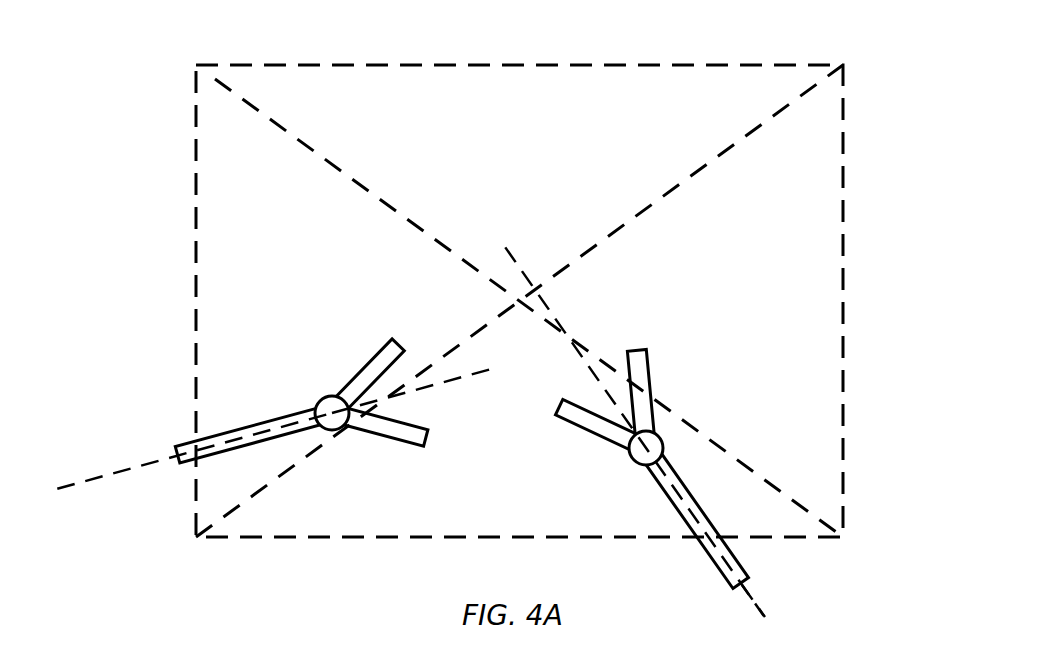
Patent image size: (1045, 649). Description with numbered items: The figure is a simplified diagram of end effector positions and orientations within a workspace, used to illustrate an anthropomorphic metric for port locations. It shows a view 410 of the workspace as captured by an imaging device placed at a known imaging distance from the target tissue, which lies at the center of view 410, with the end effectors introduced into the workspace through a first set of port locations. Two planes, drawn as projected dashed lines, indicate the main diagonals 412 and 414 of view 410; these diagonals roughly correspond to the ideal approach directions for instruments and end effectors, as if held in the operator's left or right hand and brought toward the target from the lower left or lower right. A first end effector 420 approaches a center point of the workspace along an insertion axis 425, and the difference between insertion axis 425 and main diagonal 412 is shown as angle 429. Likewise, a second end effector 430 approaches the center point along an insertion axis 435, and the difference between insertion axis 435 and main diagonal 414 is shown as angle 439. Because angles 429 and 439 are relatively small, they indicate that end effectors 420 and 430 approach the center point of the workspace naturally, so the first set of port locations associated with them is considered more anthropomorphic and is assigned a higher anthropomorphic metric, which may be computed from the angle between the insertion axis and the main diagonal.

The view 410 is at (805, 65).
The main diagonal 412 is at (233, 92).
The main diagonal 414 is at (797, 97).
The first end effector 420 is at (737, 557).
The insertion axis 425 is at (757, 603).
The angle 429 is at (495, 263).
The second end effector 430 is at (295, 408).
The insertion axis 435 is at (118, 460).
The angle 439 is at (447, 380).